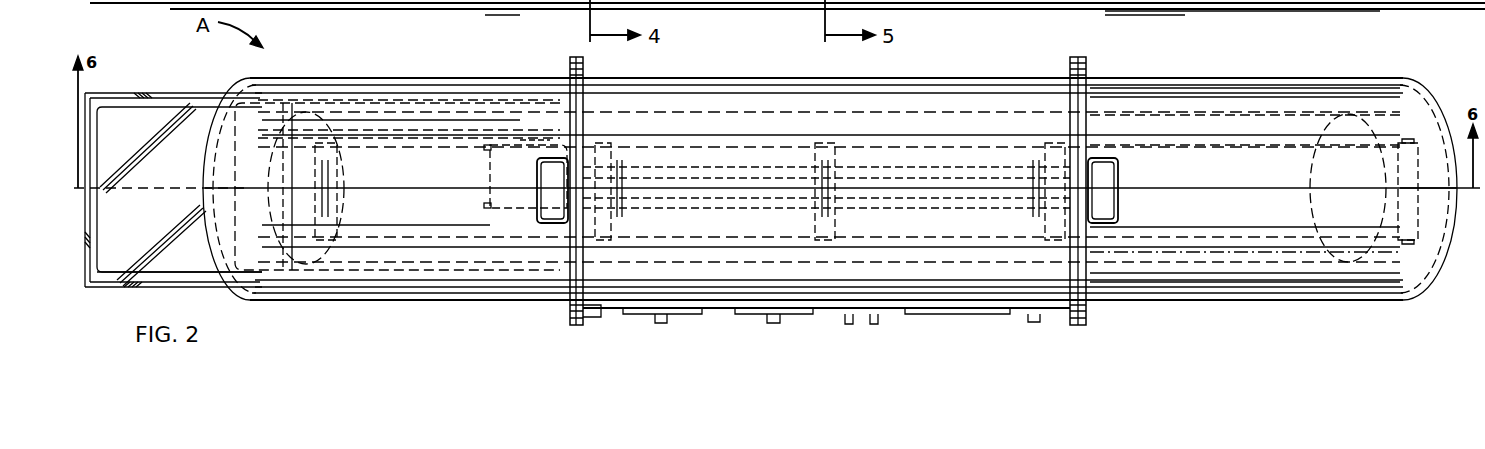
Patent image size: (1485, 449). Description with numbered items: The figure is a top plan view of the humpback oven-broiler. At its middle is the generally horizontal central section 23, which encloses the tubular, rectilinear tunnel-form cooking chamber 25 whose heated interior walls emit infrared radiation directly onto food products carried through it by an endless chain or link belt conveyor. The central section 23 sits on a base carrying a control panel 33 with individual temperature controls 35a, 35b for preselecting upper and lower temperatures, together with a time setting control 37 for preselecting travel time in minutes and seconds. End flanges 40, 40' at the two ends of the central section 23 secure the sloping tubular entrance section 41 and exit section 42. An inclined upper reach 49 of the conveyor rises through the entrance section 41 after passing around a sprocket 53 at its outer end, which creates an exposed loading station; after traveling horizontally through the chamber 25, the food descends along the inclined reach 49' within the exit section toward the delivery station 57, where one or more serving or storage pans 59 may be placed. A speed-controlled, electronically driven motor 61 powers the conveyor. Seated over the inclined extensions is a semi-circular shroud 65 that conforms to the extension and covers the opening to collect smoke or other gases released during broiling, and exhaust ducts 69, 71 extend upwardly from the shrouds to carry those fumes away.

The delivery station 57 is at (140, 80).
The serving or storage pan 59 is at (203, 277).
The central section 23 is at (700, 77).
The tunnel-form cooking chamber 25 is at (742, 110).
The inclined reach 49' is at (397, 150).
The exit section 42 is at (322, 268).
The motor 61 is at (517, 148).
The exhaust duct 71 is at (557, 226).
The end flange 40' is at (550, 180).
The end flange 40 is at (1101, 178).
The control panel 33 is at (600, 312).
The temperature control 35a is at (673, 320).
The temperature control 35b is at (783, 320).
The time setting control 37 is at (968, 316).
The exhaust duct 69 is at (1110, 158).
The inclined upper reach 49 is at (1245, 154).
The semi-circular shroud 65 is at (1240, 80).
The entrance section 41 is at (1295, 115).
The sprocket 53 is at (1420, 222).